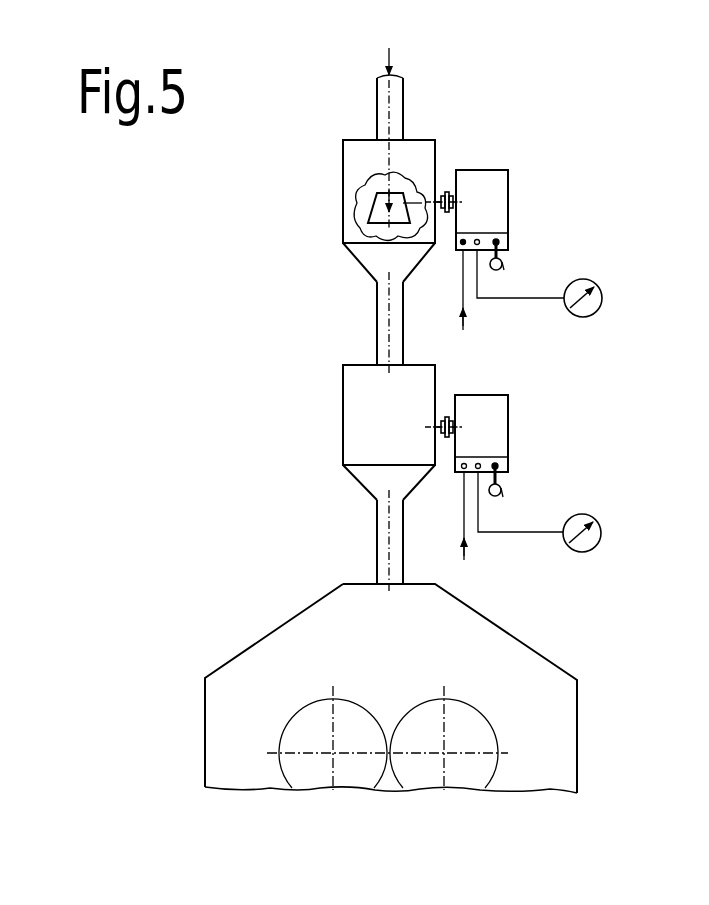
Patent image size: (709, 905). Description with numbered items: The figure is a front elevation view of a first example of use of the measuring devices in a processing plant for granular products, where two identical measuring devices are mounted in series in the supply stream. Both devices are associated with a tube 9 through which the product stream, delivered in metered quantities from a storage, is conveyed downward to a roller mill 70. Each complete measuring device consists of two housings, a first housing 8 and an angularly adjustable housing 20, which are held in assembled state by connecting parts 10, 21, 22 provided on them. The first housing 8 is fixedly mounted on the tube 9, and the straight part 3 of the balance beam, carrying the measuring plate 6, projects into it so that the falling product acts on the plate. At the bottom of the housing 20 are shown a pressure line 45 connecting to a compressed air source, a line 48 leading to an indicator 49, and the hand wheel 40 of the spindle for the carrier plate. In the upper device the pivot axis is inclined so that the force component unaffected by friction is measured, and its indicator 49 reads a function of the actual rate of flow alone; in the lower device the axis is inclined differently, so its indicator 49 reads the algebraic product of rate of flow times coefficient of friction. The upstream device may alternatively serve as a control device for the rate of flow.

The straight part of balance beam 3 is at (413, 197).
The measuring plate 6 is at (366, 223).
The first housing 8 is at (341, 184).
The tube 9 is at (375, 322).
The connecting part 10 is at (443, 194).
The second housing 20 is at (510, 200).
The connecting part 21 is at (447, 195).
The connecting part 22 is at (451, 198).
The hand wheel 40 is at (506, 258).
The pressure line 45 is at (467, 315).
The line 48 is at (517, 302).
The indicator 49 is at (604, 297).
The roller mill 70 is at (293, 615).